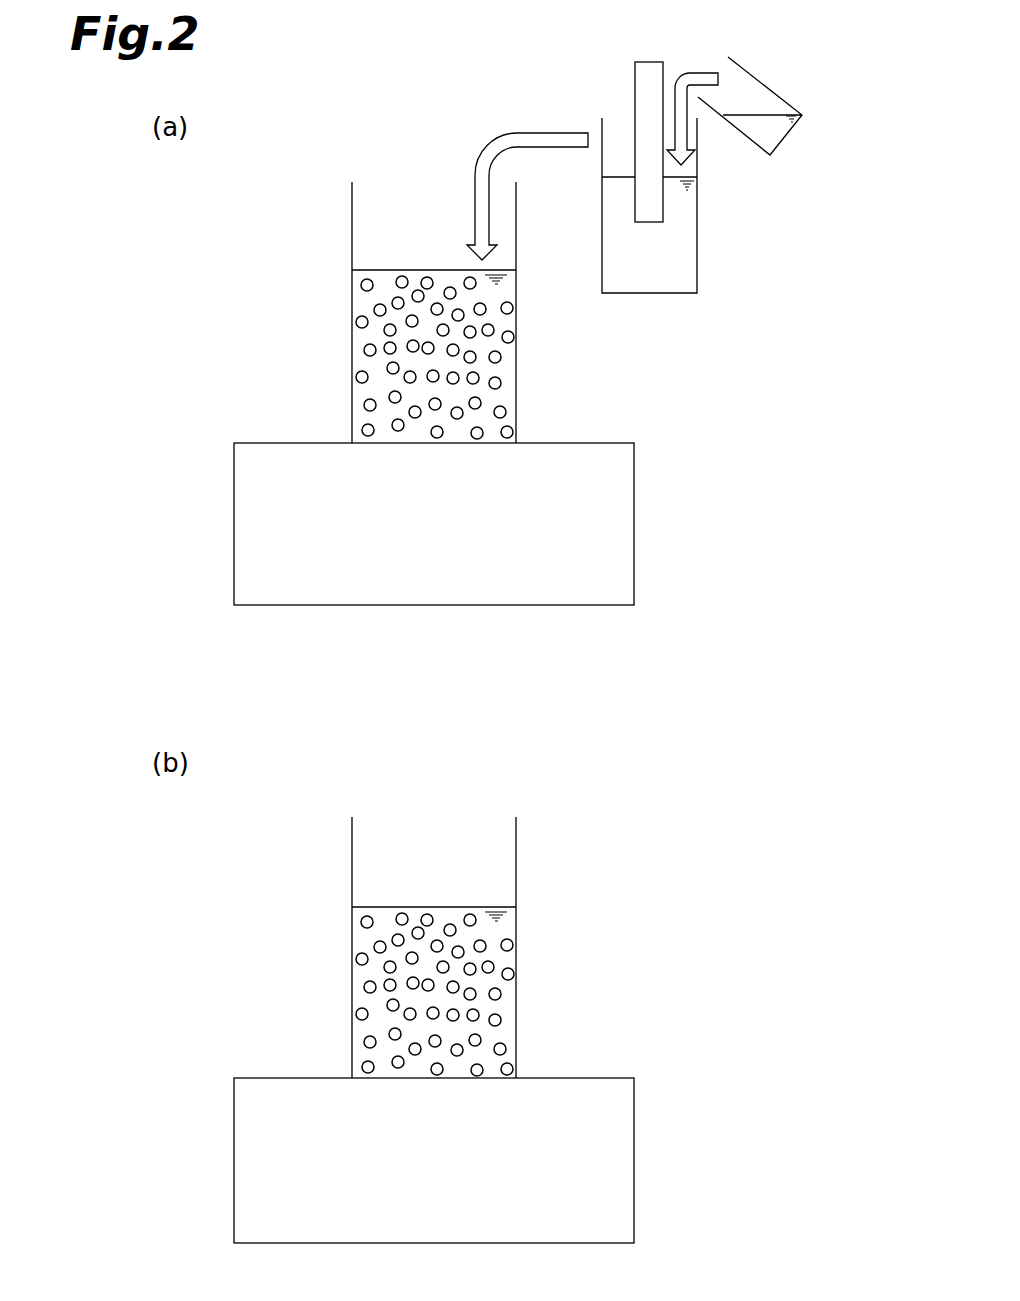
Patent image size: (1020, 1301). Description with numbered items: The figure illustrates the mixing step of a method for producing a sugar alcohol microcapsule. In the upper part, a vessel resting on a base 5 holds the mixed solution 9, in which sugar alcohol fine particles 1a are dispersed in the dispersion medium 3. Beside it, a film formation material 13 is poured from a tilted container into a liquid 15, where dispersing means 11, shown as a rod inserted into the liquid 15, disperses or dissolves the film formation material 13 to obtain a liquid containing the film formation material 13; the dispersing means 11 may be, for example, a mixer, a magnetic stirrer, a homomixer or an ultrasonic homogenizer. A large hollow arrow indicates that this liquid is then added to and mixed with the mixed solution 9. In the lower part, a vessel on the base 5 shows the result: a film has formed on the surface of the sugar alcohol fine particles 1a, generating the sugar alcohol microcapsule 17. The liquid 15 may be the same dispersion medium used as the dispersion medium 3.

The sugar alcohol fine particles 1a is at (501, 356).
The dispersion medium 3 is at (505, 393).
The base 5 is at (620, 527).
The mixed solution 9 is at (482, 354).
The dispersing means 11 is at (633, 76).
The film formation material 13 is at (780, 137).
The liquid 15 is at (690, 247).
The sugar alcohol microcapsule 17 is at (501, 992).